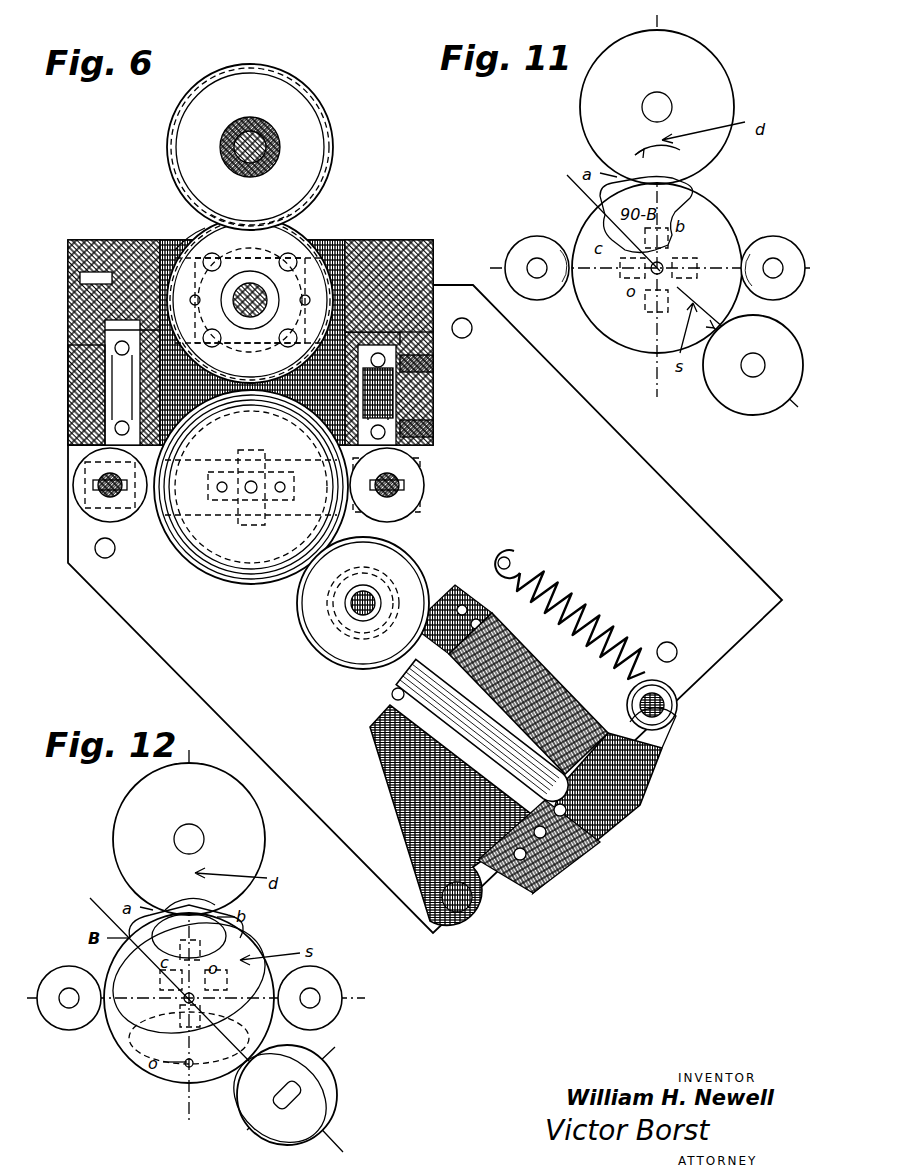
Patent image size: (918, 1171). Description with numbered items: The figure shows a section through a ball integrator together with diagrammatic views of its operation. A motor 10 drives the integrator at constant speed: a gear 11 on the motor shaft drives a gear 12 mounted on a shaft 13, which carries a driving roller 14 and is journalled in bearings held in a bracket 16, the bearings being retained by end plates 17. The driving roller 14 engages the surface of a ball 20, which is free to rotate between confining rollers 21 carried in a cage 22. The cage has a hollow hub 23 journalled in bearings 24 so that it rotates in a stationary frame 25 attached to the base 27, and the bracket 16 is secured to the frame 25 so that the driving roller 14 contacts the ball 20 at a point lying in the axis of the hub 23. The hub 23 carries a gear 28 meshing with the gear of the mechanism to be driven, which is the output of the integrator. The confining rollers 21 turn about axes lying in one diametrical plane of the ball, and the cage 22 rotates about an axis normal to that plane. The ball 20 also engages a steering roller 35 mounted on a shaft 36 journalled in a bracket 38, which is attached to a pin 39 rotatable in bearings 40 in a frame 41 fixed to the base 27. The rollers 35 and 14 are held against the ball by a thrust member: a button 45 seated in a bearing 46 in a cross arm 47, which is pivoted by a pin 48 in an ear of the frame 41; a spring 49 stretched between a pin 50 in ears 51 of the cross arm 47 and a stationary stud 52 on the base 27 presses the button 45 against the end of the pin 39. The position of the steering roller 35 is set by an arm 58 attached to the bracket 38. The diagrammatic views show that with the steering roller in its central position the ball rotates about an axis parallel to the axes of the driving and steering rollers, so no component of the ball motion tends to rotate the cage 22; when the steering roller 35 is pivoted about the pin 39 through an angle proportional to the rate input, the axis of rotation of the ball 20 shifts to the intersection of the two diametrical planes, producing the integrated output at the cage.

In FIG. 6, the motor 10 is at (298, 96).
In FIG. 6, the gear 11 is at (292, 204).
In FIG. 6, the gear 12 is at (207, 224).
In FIG. 6, the shaft 13 is at (232, 297).
In FIG. 6, the driving roller 14 is at (347, 241).
In FIG. 11, the driving roller 14 is at (720, 79).
In FIG. 12, the driving roller 14 is at (152, 783).
In FIG. 6, the bracket 16 is at (416, 244).
In FIG. 6, the end plates 17 is at (145, 230).
In FIG. 6, the ball 20 is at (249, 574).
In FIG. 11, the ball 20 is at (708, 213).
In FIG. 12, the ball 20 is at (250, 947).
In FIG. 6, the confining rollers 21 is at (83, 493).
In FIG. 11, the confining rollers 21 is at (528, 242).
In FIG. 12, the confining rollers 21 is at (62, 968).
In FIG. 6, the cage 22 is at (420, 458).
In FIG. 6, the hollow hub 23 is at (363, 397).
In FIG. 6, the bearings 24 is at (433, 364).
In FIG. 6, the stationary frame 25 is at (73, 413).
In FIG. 6, the base 27 is at (157, 638).
In FIG. 6, the gear 28 is at (75, 313).
In FIG. 6, the steering roller 35 is at (385, 559).
In FIG. 11, the steering roller 35 is at (715, 385).
In FIG. 12, the steering roller 35 is at (327, 1076).
In FIG. 6, the shaft 36 is at (347, 610).
In FIG. 6, the bracket 38 is at (385, 672).
In FIG. 6, the pin 39 is at (450, 750).
In FIG. 6, the bearings 40 is at (398, 723).
In FIG. 6, the frame 41 is at (487, 620).
In FIG. 6, the button 45 is at (595, 838).
In FIG. 6, the bearing 46 is at (590, 805).
In FIG. 6, the cross arm 47 is at (633, 780).
In FIG. 6, the pin 48 is at (470, 910).
In FIG. 6, the spring 49 is at (581, 614).
In FIG. 6, the pin 50 is at (679, 700).
In FIG. 6, the ears 51 is at (655, 722).
In FIG. 6, the stationary stud 52 is at (504, 553).
In FIG. 6, the arm 58 is at (392, 700).